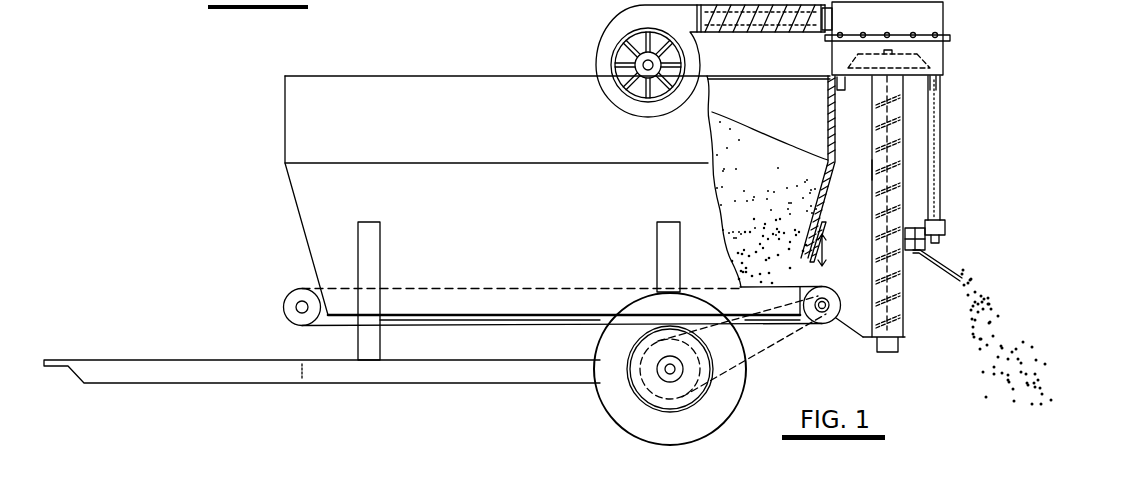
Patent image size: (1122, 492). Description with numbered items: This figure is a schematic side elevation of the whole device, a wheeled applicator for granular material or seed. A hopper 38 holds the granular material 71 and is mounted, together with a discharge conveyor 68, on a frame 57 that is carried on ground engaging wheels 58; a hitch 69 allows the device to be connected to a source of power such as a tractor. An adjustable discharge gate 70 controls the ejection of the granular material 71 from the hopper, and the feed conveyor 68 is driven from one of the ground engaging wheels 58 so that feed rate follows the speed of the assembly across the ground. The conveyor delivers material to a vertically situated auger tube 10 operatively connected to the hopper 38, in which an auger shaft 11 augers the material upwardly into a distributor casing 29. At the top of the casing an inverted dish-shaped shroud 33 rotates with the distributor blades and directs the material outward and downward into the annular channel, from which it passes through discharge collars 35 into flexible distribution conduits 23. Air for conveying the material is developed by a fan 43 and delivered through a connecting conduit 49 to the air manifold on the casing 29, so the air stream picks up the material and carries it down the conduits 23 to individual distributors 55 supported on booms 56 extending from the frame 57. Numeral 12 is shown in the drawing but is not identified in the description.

The auger tube 10 is at (872, 113).
The auger shaft 11 is at (877, 170).
The partition 12 is at (881, 147).
The flexible distribution conduit 23 is at (940, 130).
The distributor casing 29 is at (933, 22).
The inverted dish-shaped shroud 33 is at (917, 62).
The discharge collar 35 is at (933, 80).
The hopper 38 is at (300, 112).
The fan 43 is at (612, 92).
The connecting conduit 49 is at (748, 22).
The individual distributor 55 is at (955, 250).
The boom 56 is at (912, 252).
The frame 57 is at (358, 247).
The ground engaging wheel 58 is at (612, 386).
The discharge conveyor 68 is at (288, 292).
The hitch 69 is at (165, 340).
The adjustable discharge gate 70 is at (822, 232).
The granular material 71 is at (826, 278).